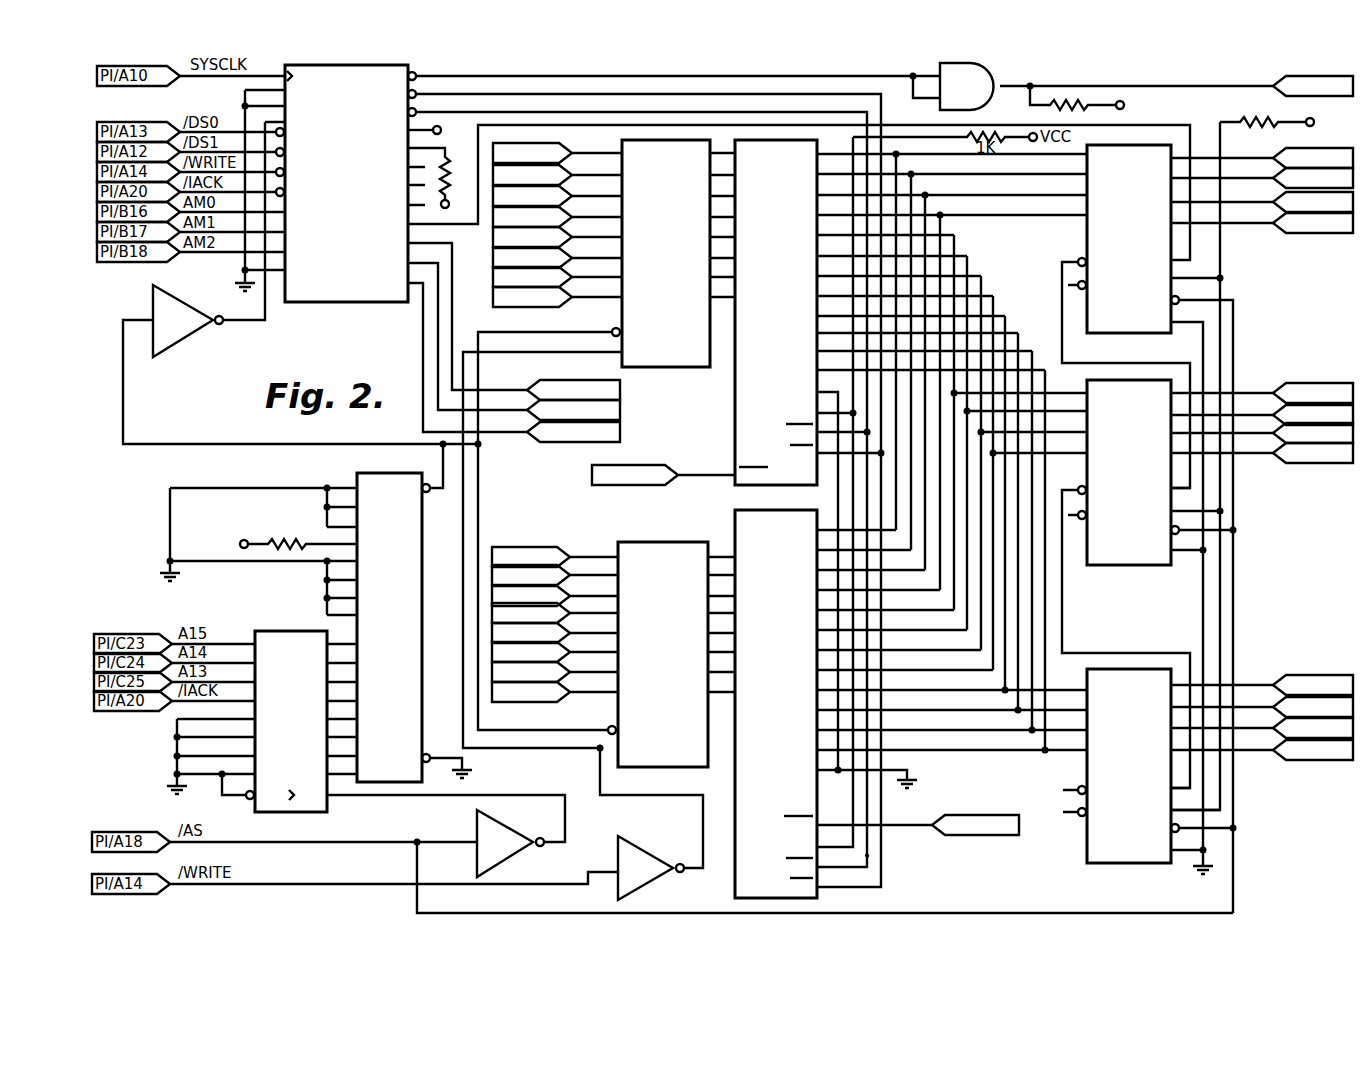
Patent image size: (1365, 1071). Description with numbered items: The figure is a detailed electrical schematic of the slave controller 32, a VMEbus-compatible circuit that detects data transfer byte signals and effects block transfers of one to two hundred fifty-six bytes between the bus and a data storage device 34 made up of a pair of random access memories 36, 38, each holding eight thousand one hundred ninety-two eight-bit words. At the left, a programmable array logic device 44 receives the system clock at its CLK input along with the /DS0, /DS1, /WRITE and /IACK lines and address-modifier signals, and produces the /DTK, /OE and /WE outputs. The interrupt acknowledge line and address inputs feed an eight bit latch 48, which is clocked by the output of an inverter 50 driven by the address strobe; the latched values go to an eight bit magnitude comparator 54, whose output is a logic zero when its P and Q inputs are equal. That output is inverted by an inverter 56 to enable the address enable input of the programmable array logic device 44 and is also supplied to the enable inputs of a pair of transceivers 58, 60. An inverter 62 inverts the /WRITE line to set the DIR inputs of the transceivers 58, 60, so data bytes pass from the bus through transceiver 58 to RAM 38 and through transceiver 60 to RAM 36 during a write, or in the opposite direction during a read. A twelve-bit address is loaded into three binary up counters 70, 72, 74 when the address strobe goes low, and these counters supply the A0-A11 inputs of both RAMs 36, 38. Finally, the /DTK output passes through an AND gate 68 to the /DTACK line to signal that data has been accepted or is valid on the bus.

The slave controller 32 is at (610, 812).
The data storage device 34 is at (896, 858).
The random access memory 36 is at (735, 437).
The random access memory 38 is at (735, 520).
The programmable array logic device 44 is at (400, 302).
The eight bit latch 48 is at (291, 631).
The inverter 50 is at (477, 828).
The eight bit magnitude comparator 54 is at (333, 473).
The inverter 56 is at (170, 345).
The transceiver 58 is at (618, 542).
The transceiver 60 is at (708, 368).
The inverter 62 is at (620, 850).
The AND gate 68 is at (932, 70).
The binary up counter 70 is at (1087, 236).
The binary up counter 72 is at (1172, 565).
The binary up counter 74 is at (1090, 847).